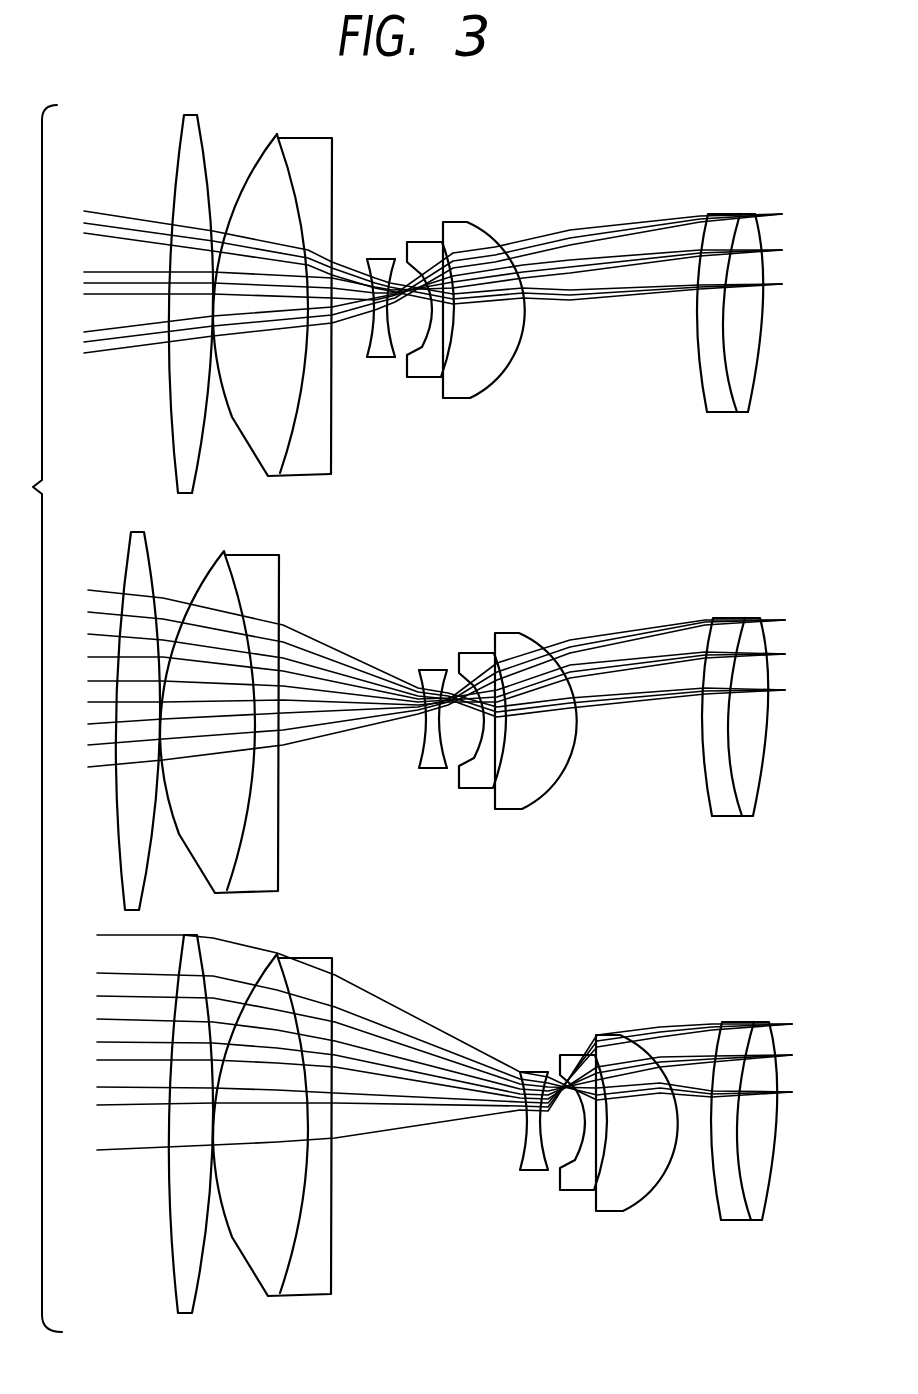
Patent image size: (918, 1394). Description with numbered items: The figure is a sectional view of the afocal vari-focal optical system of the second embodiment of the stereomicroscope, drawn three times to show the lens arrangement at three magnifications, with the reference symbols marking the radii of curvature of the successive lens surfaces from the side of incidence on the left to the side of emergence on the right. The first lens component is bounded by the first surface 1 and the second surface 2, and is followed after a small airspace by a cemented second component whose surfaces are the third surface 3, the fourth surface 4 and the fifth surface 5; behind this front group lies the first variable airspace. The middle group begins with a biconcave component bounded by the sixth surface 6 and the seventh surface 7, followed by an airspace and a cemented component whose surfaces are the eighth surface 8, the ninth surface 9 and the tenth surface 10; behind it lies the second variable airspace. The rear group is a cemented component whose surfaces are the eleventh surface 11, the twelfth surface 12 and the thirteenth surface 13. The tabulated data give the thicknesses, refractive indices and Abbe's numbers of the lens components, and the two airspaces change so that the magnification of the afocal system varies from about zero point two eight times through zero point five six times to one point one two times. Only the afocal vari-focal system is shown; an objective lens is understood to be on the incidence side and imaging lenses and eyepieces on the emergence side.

The radius of curvature r1 1 is at (176, 443).
The radius of curvature r2 2 is at (199, 448).
The radius of curvature r3 3 is at (231, 420).
The radius of curvature r4 4 is at (291, 425).
The radius of curvature r5 5 is at (331, 435).
The radius of curvature r6 6 is at (368, 342).
The radius of curvature r7 7 is at (378, 349).
The radius of curvature r8 8 is at (414, 350).
The radius of curvature r9 9 is at (446, 360).
The radius of curvature r10 10 is at (503, 368).
The radius of curvature r11 11 is at (701, 379).
The radius of curvature r12 12 is at (723, 385).
The radius of curvature r13 13 is at (757, 385).